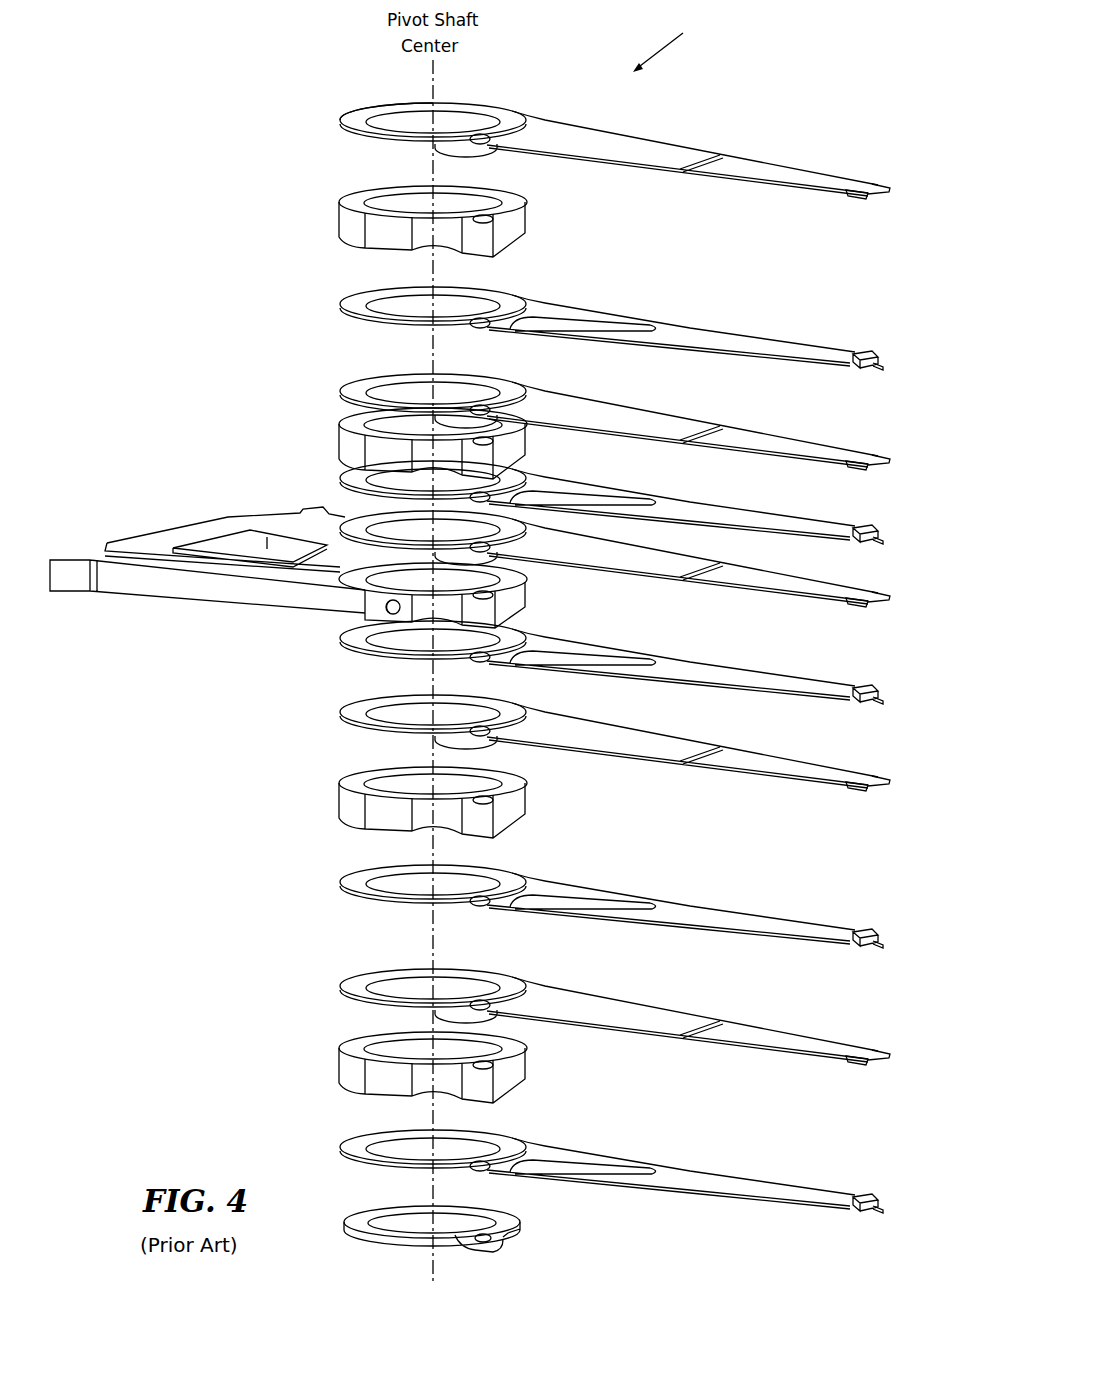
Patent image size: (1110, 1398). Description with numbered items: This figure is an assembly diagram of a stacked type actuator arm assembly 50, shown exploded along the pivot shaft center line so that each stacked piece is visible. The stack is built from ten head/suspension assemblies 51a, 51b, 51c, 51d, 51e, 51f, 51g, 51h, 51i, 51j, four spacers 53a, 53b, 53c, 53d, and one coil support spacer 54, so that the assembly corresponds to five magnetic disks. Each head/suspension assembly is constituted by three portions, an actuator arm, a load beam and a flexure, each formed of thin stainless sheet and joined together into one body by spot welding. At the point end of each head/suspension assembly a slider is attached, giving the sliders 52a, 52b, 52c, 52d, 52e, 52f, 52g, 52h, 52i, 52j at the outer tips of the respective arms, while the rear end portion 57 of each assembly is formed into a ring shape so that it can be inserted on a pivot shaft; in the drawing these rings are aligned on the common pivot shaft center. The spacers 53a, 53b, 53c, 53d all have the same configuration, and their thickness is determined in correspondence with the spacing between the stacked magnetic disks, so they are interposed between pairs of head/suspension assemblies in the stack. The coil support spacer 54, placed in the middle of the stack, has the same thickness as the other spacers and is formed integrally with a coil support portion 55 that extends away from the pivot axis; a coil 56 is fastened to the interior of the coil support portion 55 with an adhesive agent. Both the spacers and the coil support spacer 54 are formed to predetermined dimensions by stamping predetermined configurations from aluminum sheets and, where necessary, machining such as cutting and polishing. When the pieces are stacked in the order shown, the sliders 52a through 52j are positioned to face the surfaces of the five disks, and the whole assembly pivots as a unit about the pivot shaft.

The head stack assembly 50 is at (669, 40).
The head/suspension assembly 51a is at (652, 140).
The head/suspension assembly 51b is at (627, 318).
The head/suspension assembly 51c is at (656, 412).
The head/suspension assembly 51d is at (630, 496).
The head/suspension assembly 51e is at (598, 569).
The head/suspension assembly 51f is at (610, 668).
The head/suspension assembly 51g is at (597, 760).
The head/suspension assembly 51h is at (617, 892).
The head/suspension assembly 51i is at (669, 1008).
The head/suspension assembly 51j is at (627, 1161).
The slider 52a is at (856, 204).
The slider 52b is at (862, 352).
The slider 52c is at (856, 462).
The slider 52d is at (865, 529).
The slider 52e is at (856, 601).
The slider 52f is at (864, 683).
The slider 52g is at (855, 792).
The slider 52h is at (864, 931).
The slider 52i is at (853, 1059).
The slider 52j is at (864, 1199).
The spacer 53a is at (338, 223).
The spacer 53b is at (338, 445).
The spacer 53c is at (338, 803).
The spacer 53d is at (338, 1068).
The coil support spacer 54 is at (288, 590).
The coil support portion 55 is at (152, 589).
The coil 56 is at (203, 530).
The rear end portion 57 is at (346, 124).